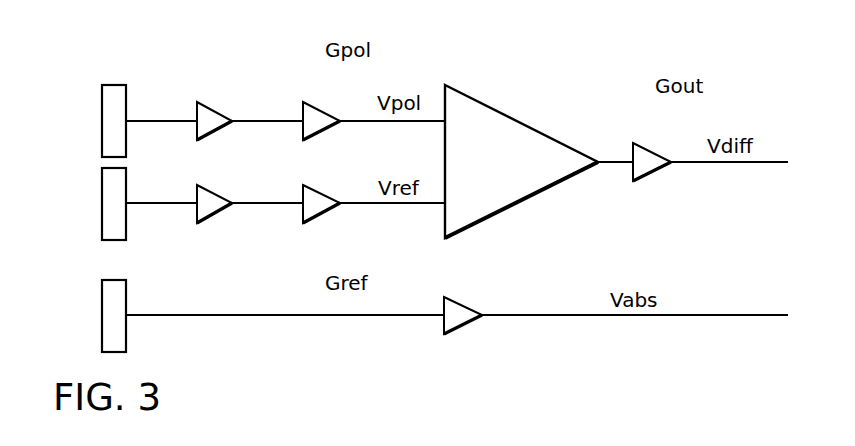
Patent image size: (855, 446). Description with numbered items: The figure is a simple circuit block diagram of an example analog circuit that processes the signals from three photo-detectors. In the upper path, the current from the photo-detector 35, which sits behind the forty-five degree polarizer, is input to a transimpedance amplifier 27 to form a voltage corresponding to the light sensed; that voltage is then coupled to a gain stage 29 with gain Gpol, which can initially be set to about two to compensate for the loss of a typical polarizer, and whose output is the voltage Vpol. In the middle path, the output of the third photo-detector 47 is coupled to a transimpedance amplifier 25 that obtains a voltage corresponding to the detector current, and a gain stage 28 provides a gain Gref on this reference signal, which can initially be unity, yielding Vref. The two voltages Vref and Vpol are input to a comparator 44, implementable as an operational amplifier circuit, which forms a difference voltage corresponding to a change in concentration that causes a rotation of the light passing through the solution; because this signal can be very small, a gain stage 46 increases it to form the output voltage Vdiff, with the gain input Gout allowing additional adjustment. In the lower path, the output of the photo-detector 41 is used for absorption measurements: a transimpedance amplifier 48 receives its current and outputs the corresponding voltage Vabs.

The photo-detector 35 is at (102, 110).
The third photo-detector 47 is at (102, 192).
The photo-detector 41 is at (102, 330).
The transimpedance amplifier 27 is at (218, 109).
The gain stage 29 is at (323, 107).
The transimpedance amplifier 25 is at (218, 213).
The gain stage 28 is at (323, 215).
The comparator 44 is at (521, 122).
The gain stage 46 is at (654, 153).
The transimpedance amplifier 48 is at (466, 324).